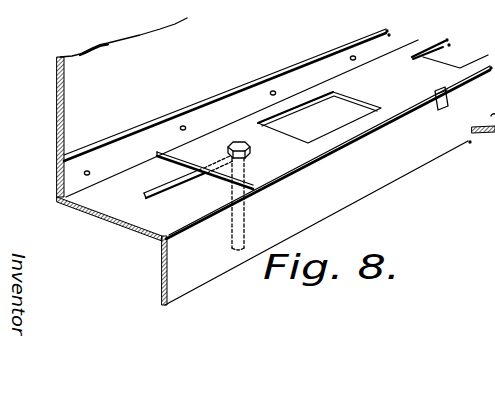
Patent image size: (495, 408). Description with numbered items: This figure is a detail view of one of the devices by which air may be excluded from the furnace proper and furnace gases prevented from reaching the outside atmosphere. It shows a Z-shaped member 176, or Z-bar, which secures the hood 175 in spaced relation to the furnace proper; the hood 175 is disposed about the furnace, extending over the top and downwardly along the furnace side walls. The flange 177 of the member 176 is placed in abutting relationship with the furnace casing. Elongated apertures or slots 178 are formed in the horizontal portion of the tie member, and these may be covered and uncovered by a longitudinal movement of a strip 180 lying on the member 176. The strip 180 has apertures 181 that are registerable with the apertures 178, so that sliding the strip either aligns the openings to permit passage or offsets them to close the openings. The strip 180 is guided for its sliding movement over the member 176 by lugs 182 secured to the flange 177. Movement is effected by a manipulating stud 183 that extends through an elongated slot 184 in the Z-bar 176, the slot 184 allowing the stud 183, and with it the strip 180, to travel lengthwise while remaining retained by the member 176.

The hood 175 is at (63, 104).
The Z-shaped member 176 is at (110, 218).
The flange 177 is at (162, 273).
The elongated apertures or slots 178 is at (435, 53).
The strip 180 is at (211, 137).
The apertures 181 is at (424, 57).
The lugs 182 is at (437, 108).
The manipulating stud 183 is at (246, 231).
The elongated slot 184 is at (185, 181).